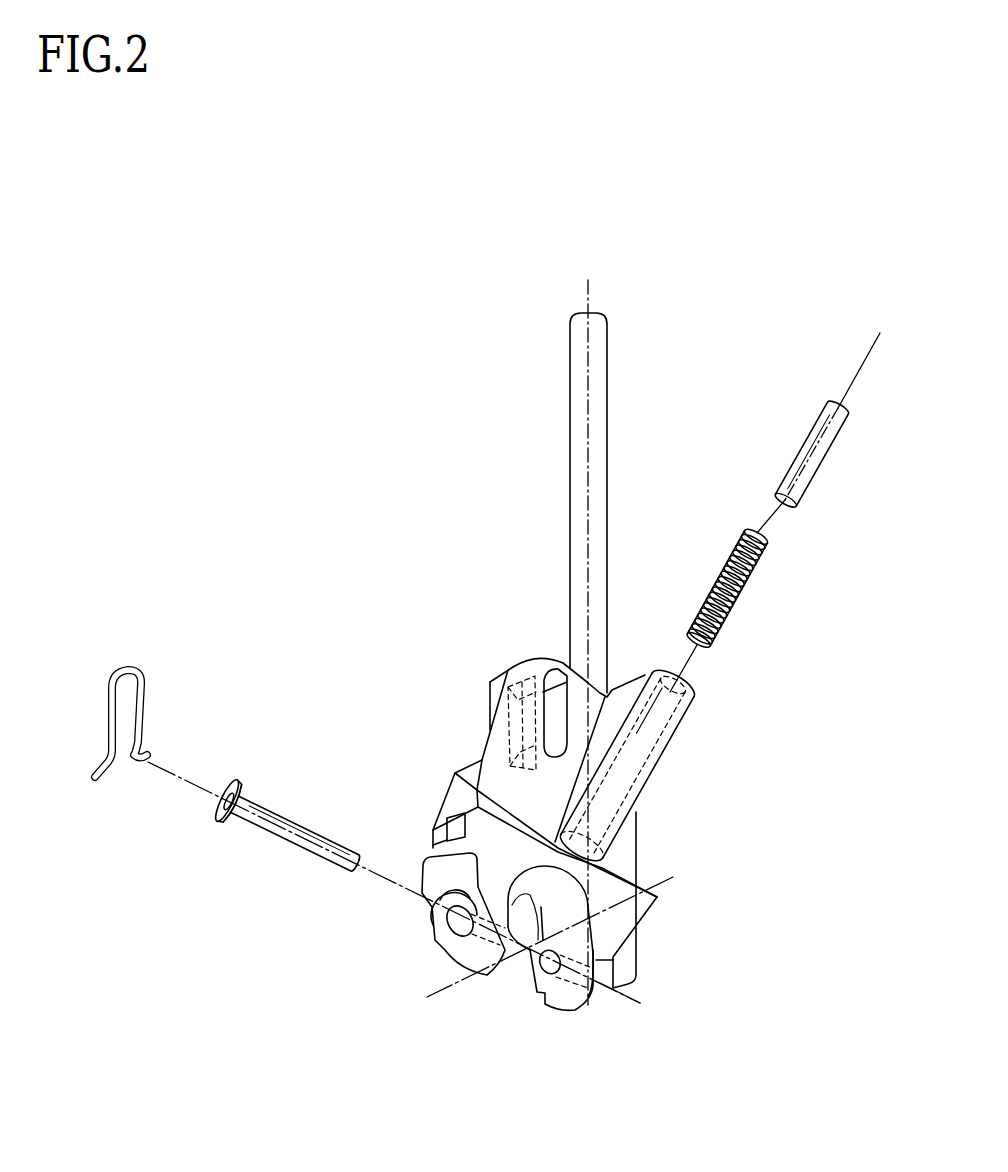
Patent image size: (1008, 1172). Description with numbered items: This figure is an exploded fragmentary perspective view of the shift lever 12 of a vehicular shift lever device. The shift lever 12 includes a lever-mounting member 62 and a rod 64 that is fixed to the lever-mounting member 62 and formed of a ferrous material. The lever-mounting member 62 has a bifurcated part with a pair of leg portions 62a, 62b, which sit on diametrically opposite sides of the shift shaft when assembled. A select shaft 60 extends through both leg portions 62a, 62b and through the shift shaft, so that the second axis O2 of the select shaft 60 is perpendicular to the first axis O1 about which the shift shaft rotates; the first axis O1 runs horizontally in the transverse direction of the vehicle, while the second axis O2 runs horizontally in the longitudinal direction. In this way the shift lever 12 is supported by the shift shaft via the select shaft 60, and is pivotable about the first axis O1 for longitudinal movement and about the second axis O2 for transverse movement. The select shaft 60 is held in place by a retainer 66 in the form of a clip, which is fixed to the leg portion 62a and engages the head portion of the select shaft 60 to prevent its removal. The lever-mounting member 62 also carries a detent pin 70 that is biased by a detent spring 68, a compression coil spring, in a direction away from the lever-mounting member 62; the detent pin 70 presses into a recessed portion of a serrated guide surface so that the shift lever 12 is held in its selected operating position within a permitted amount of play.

The shift lever 12 is at (496, 318).
The select shaft 60 is at (280, 832).
The lever-mounting member 62 is at (472, 682).
The leg portion 62a is at (455, 947).
The leg portion 62b is at (575, 1012).
The rod 64 is at (600, 458).
The retainer 66 is at (140, 705).
The detent spring 68 is at (740, 605).
The detent pin 70 is at (810, 440).
The first axis O1 is at (569, 927).
The second axis O2 is at (639, 1004).